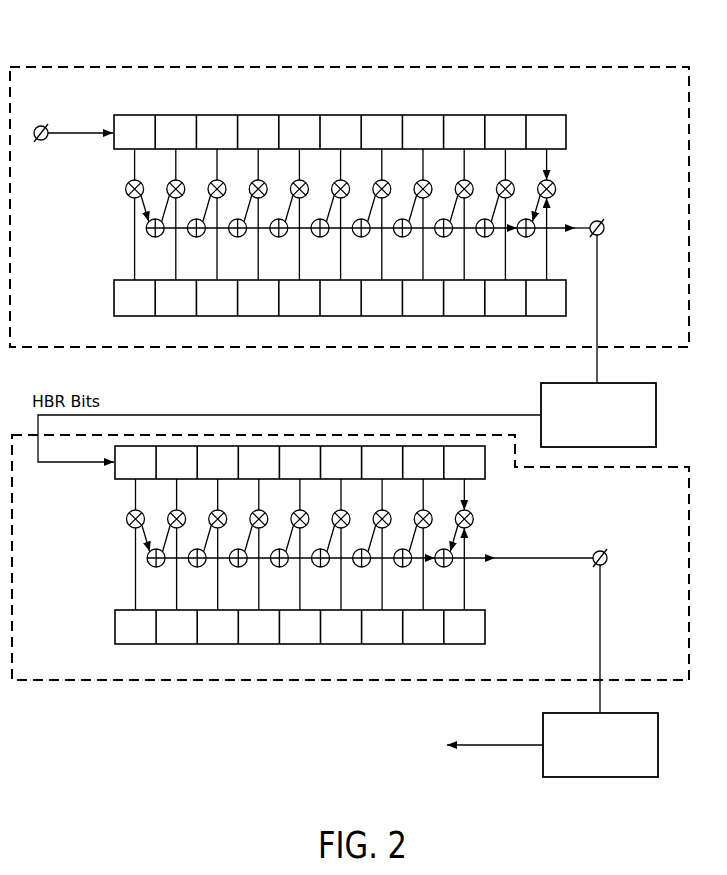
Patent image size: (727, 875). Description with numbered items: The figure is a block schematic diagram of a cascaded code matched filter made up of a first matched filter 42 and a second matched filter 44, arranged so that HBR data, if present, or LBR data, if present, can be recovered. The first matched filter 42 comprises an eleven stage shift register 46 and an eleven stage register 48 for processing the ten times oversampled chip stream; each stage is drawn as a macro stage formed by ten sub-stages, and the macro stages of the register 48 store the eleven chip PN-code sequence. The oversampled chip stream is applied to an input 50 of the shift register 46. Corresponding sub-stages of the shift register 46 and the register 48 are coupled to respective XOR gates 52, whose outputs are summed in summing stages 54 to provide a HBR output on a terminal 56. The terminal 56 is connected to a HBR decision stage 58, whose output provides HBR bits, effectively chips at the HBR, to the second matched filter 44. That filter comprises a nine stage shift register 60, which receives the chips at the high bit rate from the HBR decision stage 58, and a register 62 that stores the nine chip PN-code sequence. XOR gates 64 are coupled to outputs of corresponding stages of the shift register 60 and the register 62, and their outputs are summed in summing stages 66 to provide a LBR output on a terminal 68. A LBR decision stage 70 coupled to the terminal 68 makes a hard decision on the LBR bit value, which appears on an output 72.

The first matched filter 42 is at (426, 64).
The second matched filter 44 is at (134, 686).
The shift register 46 is at (567, 128).
The register 48 is at (113, 299).
The input 50 is at (38, 122).
The XOR gates 52 is at (171, 181).
The summing stages 54 is at (190, 235).
The terminal 56 is at (604, 227).
The HBR decision stage 58 is at (644, 406).
The shift register 60 is at (487, 465).
The register 62 is at (114, 630).
The XOR gates 64 is at (172, 511).
The summing stages 66 is at (191, 565).
The terminal 68 is at (607, 556).
The LBR decision stage 70 is at (645, 734).
The output 72 is at (485, 750).